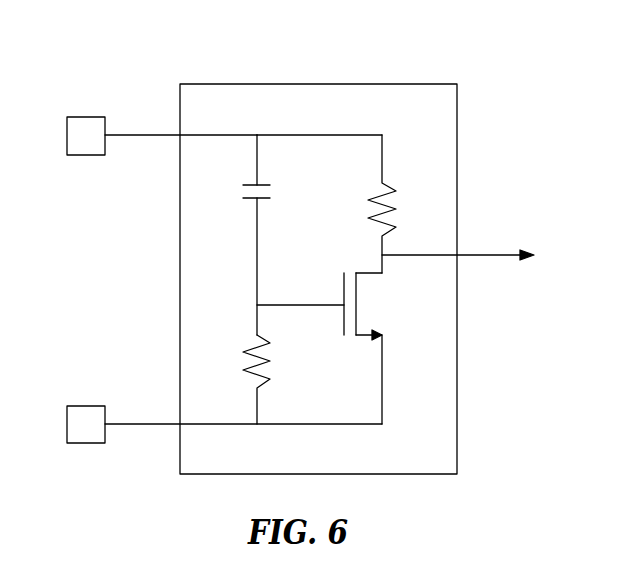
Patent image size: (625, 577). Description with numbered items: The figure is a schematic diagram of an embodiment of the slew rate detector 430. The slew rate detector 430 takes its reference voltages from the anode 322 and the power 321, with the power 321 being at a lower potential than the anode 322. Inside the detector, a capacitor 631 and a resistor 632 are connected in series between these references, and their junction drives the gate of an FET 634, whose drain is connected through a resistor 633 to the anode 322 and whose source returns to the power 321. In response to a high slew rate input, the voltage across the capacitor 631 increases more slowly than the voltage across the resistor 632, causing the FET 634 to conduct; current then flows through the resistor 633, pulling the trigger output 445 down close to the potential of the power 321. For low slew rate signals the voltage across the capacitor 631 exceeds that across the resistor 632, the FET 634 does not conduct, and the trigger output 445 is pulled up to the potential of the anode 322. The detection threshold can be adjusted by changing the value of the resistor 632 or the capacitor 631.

The slew rate detector 430 is at (417, 84).
The anode 322 is at (86, 155).
The power 321 is at (86, 443).
The capacitor 631 is at (252, 199).
The resistor 632 is at (268, 356).
The resistor 633 is at (370, 216).
The FET 634 is at (357, 313).
The trigger output 445 is at (485, 255).